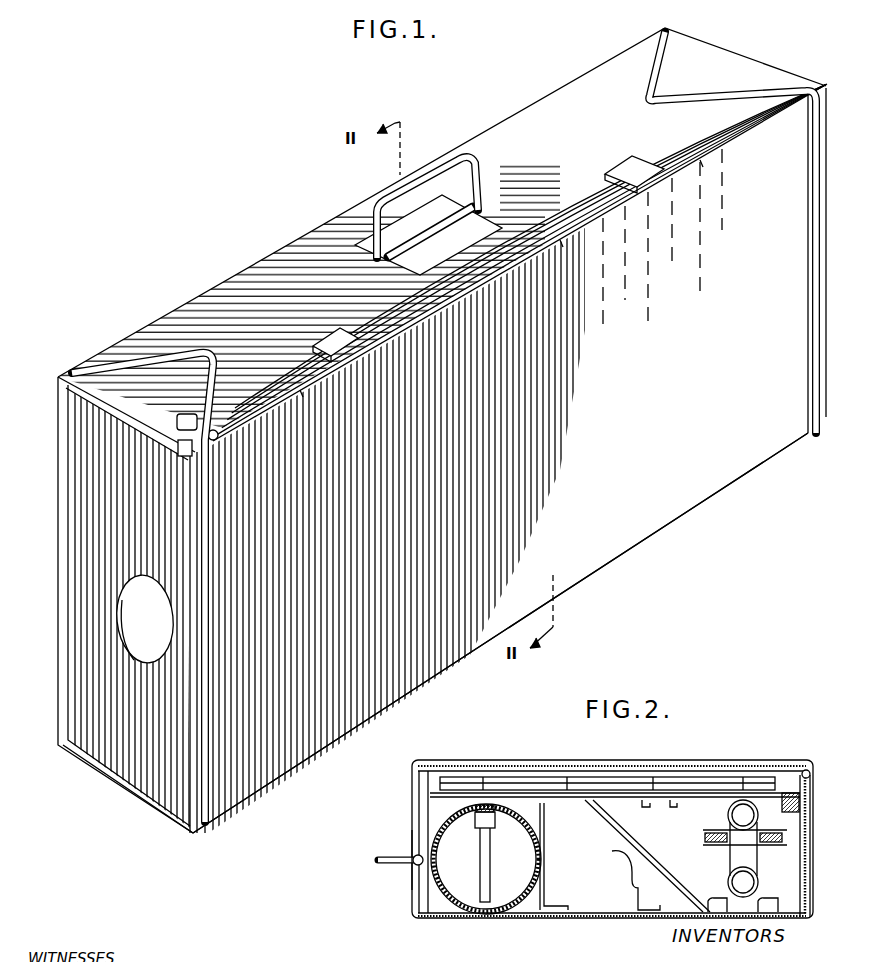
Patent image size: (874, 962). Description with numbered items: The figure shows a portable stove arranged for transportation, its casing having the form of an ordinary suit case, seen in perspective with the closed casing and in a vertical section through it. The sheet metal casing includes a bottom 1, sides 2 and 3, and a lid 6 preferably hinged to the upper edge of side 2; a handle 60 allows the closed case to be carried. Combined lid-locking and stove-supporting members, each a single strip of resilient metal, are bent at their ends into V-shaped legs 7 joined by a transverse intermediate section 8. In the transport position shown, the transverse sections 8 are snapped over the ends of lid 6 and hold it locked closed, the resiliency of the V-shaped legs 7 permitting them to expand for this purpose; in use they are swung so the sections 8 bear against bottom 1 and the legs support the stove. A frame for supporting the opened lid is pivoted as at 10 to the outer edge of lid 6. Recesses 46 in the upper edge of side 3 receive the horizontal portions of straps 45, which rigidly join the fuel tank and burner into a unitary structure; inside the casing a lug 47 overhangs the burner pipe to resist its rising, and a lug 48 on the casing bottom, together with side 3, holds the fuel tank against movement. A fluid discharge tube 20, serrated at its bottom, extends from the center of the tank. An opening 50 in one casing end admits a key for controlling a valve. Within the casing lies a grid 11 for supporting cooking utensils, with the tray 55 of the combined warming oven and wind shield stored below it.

In FIG. 2, the bottom 1 is at (590, 915).
In FIG. 2, the side 2 is at (807, 833).
In FIG. 2, the side 3 is at (418, 893).
In FIG. 2, the lid 6 is at (745, 767).
In FIG. 1, the V-shaped legs 7 is at (133, 360).
In FIG. 1, the transverse intermediate section 8 is at (205, 686).
In FIG. 1, the pivot 10 is at (283, 393).
In FIG. 2, the grid 11 is at (782, 787).
In FIG. 2, the fluid discharge tube 20 is at (485, 882).
In FIG. 2, the straps 45 is at (605, 805).
In FIG. 1, the recesses 46 is at (337, 331).
In FIG. 2, the lug 47 is at (612, 851).
In FIG. 2, the lug 48 is at (532, 897).
In FIG. 1, the opening 50 is at (128, 620).
In FIG. 2, the tray 55 is at (666, 808).
In FIG. 1, the handle 60 is at (443, 160).